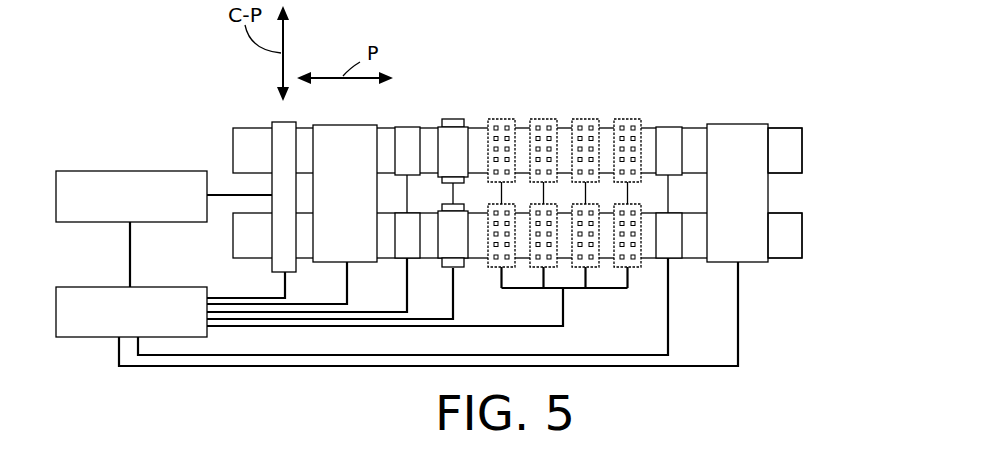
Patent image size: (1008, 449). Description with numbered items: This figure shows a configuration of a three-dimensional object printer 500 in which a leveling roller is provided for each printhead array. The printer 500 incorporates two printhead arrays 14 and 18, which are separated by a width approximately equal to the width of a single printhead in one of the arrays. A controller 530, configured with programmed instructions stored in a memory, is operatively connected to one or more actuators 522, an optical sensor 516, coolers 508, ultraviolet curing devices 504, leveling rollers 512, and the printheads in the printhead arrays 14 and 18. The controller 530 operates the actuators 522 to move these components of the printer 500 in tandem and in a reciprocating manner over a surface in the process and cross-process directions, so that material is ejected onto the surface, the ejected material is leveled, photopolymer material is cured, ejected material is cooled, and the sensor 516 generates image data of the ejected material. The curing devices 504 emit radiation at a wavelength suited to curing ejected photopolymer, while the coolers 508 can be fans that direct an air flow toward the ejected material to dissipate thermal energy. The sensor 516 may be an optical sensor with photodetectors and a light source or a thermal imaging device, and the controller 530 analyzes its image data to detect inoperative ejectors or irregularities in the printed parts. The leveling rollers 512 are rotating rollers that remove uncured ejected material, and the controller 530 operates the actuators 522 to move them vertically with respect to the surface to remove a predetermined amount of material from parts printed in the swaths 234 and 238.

The printer 500 is at (620, 75).
The ultraviolet curing devices 504 is at (421, 228).
The coolers 508 is at (345, 125).
The leveling rollers 512 is at (468, 228).
The optical sensor 516 is at (278, 122).
The actuators 522 is at (133, 171).
The controller 530 is at (158, 287).
The printhead array 14 is at (546, 113).
The printhead array 18 is at (628, 293).
The swath 234 is at (802, 150).
The swath 238 is at (802, 238).